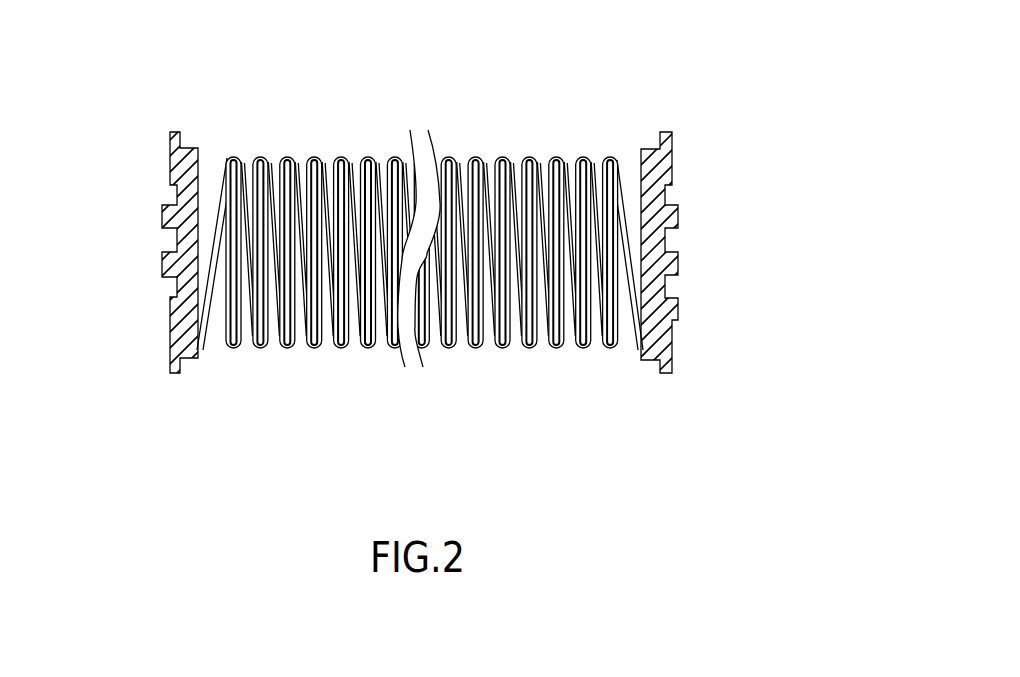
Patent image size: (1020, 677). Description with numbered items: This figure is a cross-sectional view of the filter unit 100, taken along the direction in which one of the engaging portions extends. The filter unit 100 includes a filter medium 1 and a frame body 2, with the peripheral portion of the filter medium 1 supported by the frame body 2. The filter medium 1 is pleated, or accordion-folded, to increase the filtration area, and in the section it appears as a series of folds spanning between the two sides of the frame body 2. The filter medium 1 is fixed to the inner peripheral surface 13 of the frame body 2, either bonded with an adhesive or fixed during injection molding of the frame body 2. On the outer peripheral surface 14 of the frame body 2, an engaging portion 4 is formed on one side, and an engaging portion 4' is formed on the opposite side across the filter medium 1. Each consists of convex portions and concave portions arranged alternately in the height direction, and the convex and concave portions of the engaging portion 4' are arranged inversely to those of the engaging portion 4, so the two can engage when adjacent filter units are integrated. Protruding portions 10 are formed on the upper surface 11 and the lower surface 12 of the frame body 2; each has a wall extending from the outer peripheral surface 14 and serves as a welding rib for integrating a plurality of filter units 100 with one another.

The filter unit 100 is at (170, 42).
The filter medium 1 is at (503, 160).
The frame body 2 is at (714, 179).
The engaging portion 4 is at (701, 254).
The engaging portion 4' is at (137, 255).
The protruding portions 10 is at (670, 137).
The upper surface 11 is at (653, 150).
The lower surface 12 is at (652, 356).
The inner peripheral surface 13 is at (198, 160).
The outer peripheral surface 14 is at (170, 157).